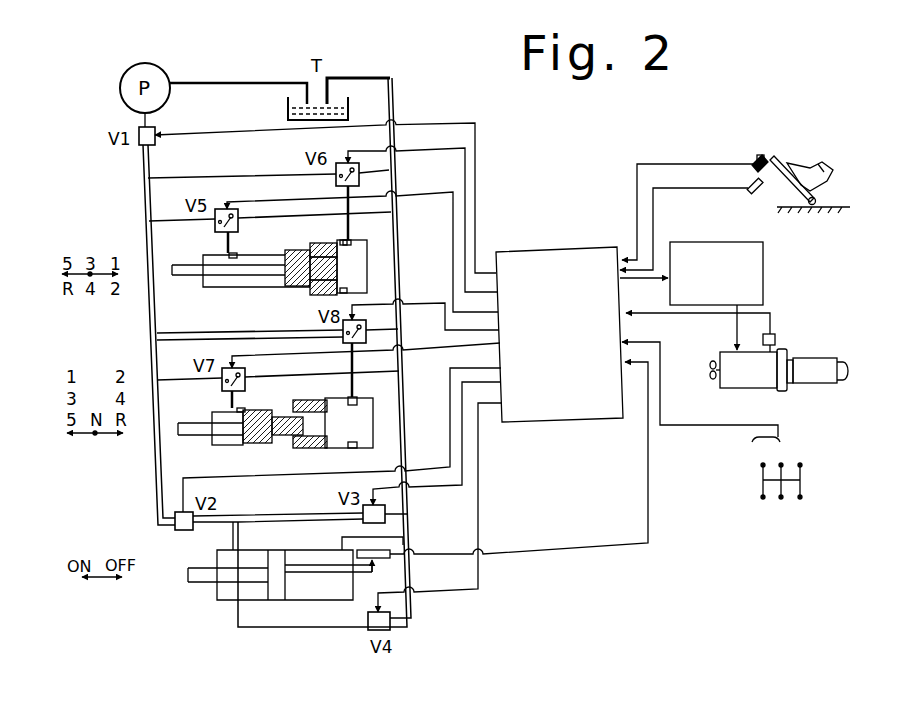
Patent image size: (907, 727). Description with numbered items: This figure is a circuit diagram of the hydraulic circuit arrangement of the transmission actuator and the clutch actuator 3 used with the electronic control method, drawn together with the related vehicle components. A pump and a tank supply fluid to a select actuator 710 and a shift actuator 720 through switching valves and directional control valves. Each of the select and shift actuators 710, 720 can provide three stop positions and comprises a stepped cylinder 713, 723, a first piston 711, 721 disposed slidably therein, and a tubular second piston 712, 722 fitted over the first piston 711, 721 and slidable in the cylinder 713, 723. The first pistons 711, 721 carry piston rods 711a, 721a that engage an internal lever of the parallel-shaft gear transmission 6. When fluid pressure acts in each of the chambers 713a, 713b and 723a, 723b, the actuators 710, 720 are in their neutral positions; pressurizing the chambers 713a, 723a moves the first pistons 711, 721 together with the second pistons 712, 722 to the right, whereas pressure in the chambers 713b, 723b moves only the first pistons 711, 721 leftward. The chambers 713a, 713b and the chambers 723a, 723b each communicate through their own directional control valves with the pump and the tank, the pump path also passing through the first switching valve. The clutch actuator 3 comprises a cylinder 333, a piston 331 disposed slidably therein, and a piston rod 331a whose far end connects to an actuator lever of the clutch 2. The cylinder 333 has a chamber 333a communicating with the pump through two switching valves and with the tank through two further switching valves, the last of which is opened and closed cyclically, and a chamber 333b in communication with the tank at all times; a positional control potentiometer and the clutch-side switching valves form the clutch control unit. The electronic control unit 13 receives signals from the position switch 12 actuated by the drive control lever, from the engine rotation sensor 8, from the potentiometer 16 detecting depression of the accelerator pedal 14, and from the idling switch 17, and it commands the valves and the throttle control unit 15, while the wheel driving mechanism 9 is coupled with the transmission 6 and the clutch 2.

The clutch 2 is at (788, 390).
The clutch actuator 3 is at (283, 597).
The parallel-shaft gear transmission 6 is at (827, 358).
The engine rotation sensor 8 is at (775, 335).
The wheel driving mechanism 9 is at (848, 372).
The position switch 12 is at (790, 437).
The electronic control unit 13 is at (559, 334).
The accelerator pedal 14 is at (780, 157).
The throttle control unit 15 is at (757, 283).
The potentiometer 16 is at (753, 197).
The idling switch 17 is at (758, 153).
The piston 331 is at (280, 597).
The piston rod 331a is at (205, 568).
The cylinder 333 is at (303, 549).
The chamber 333a is at (232, 600).
The chamber 333b is at (343, 593).
The select actuator 710 is at (228, 288).
The first piston 711 is at (282, 272).
The piston rod 711a is at (186, 265).
The tubular second piston 712 is at (310, 293).
The stepped cylinder 713 is at (258, 254).
The chamber 713a is at (197, 302).
The chamber 713b is at (368, 267).
The shift actuator 720 is at (238, 445).
The first piston 721 is at (285, 433).
The piston rod 721a is at (193, 423).
The tubular second piston 722 is at (313, 448).
The stepped cylinder 723 is at (267, 410).
The chamber 723a is at (213, 441).
The chamber 723b is at (374, 420).